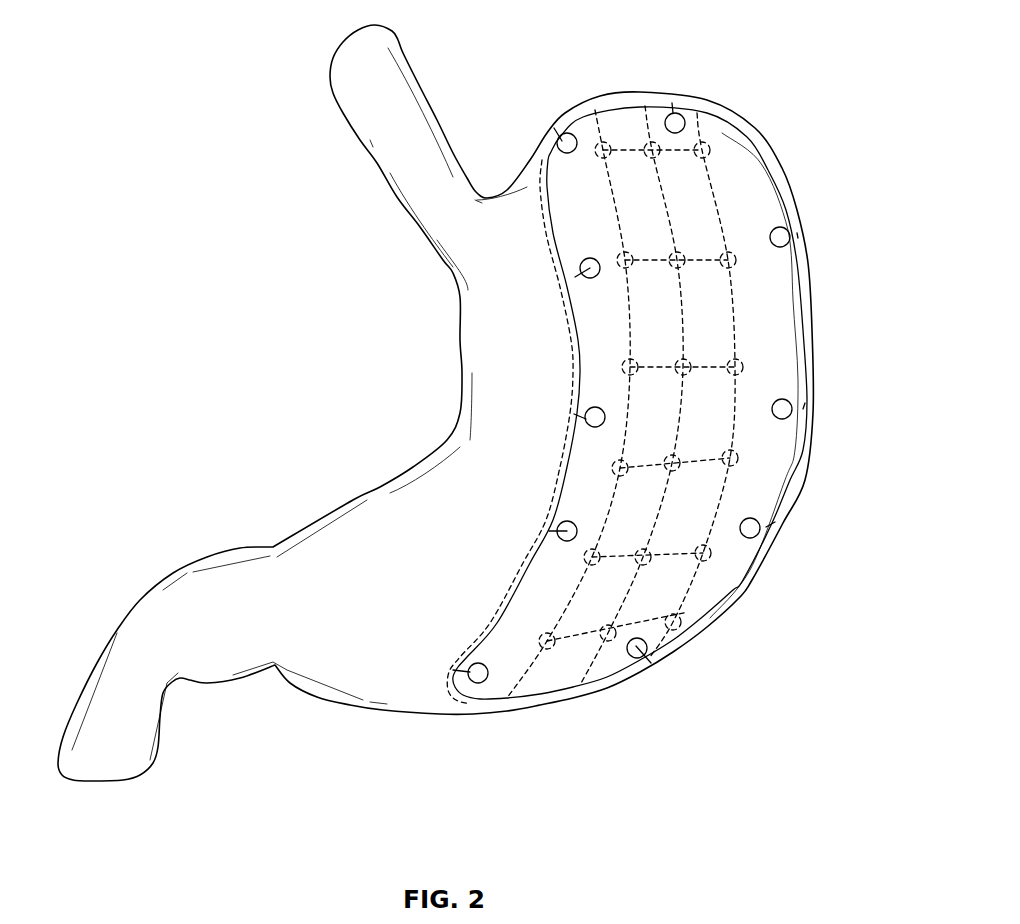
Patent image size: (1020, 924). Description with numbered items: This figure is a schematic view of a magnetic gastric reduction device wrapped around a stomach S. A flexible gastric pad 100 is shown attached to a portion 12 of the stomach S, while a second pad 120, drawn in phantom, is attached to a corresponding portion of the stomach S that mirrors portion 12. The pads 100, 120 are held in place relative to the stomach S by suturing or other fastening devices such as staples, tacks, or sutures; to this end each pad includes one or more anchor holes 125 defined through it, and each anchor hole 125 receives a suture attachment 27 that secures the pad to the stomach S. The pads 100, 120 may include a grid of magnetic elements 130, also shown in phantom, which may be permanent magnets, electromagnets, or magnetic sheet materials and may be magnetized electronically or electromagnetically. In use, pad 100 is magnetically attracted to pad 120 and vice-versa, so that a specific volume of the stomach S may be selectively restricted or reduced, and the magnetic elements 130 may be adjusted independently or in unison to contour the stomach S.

The stomach S is at (795, 139).
The portion of stomach 12 is at (810, 330).
The flexible gastric pad 100 is at (783, 304).
The second pad 120 is at (562, 295).
The magnetic elements 130 is at (677, 247).
The anchor holes 125 is at (570, 132).
The suture attachment 27 is at (554, 128).